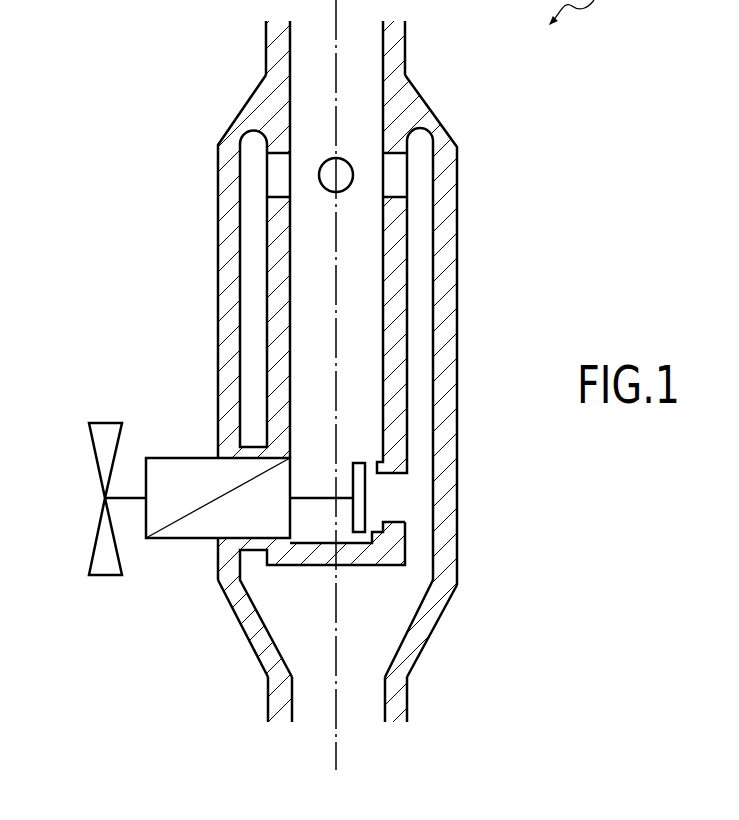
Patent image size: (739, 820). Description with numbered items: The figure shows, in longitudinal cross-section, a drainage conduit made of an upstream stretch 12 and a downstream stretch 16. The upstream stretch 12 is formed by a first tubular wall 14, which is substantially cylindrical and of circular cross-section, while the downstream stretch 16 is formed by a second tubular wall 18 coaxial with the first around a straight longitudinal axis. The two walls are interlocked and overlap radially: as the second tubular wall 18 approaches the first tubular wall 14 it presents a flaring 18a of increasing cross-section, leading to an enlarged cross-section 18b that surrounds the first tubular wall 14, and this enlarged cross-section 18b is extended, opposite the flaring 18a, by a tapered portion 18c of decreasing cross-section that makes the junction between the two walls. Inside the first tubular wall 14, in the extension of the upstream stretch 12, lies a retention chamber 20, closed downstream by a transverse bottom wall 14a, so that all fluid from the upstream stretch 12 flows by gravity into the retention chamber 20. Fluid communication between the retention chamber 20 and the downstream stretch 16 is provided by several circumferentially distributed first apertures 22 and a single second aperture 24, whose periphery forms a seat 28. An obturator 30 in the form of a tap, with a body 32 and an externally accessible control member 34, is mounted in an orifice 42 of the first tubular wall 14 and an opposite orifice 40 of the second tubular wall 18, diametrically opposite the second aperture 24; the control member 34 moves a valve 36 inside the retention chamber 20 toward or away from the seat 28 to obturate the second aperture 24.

The upstream stretch 12 is at (317, 63).
The first tubular wall 14 is at (397, 50).
The transverse bottom wall 14a is at (325, 558).
The downstream stretch 16 is at (356, 706).
The second tubular wall 18 is at (398, 713).
The flaring 18a is at (435, 622).
The enlarged cross-section 18b is at (447, 407).
The tapered portion 18c is at (258, 115).
The retention chamber 20 is at (362, 370).
The first aperture 22 is at (395, 178).
The second aperture 24 is at (402, 493).
The seat 28 is at (378, 540).
The obturator 30 is at (158, 562).
The body 32 is at (198, 540).
The control member 34 is at (102, 453).
The valve 36 is at (362, 470).
The orifice of the second tubular wall 40 is at (232, 462).
The orifice of the first tubular wall 42 is at (282, 463).